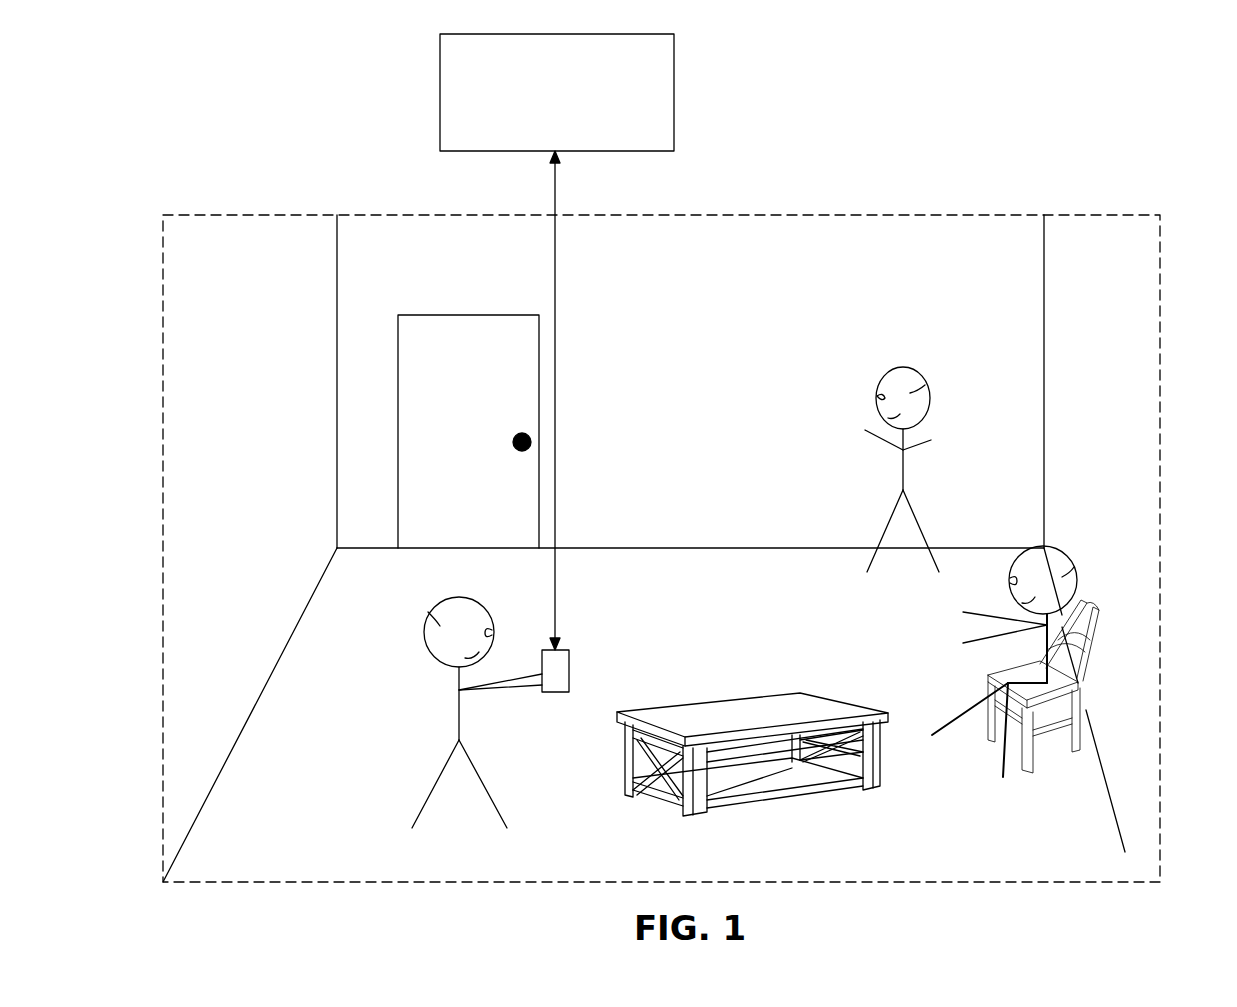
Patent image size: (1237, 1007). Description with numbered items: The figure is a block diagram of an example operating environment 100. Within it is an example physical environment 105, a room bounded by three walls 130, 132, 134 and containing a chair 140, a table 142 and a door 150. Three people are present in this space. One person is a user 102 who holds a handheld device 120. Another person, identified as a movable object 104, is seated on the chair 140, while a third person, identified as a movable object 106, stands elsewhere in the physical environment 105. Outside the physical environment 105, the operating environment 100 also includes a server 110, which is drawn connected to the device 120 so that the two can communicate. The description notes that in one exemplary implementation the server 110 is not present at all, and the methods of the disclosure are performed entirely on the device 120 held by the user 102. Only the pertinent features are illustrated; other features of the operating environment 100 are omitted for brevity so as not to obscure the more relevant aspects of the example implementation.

The operating environment 100 is at (212, 52).
The user 102 is at (440, 632).
The movable object 104 is at (1065, 576).
The physical environment 105 is at (661, 548).
The movable object 106 is at (923, 385).
The server 110 is at (557, 92).
The device 120 is at (569, 670).
The wall 130 is at (958, 230).
The wall 132 is at (1122, 235).
The wall 134 is at (188, 609).
The chair 140 is at (1095, 632).
The table 142 is at (805, 697).
The door 150 is at (442, 340).